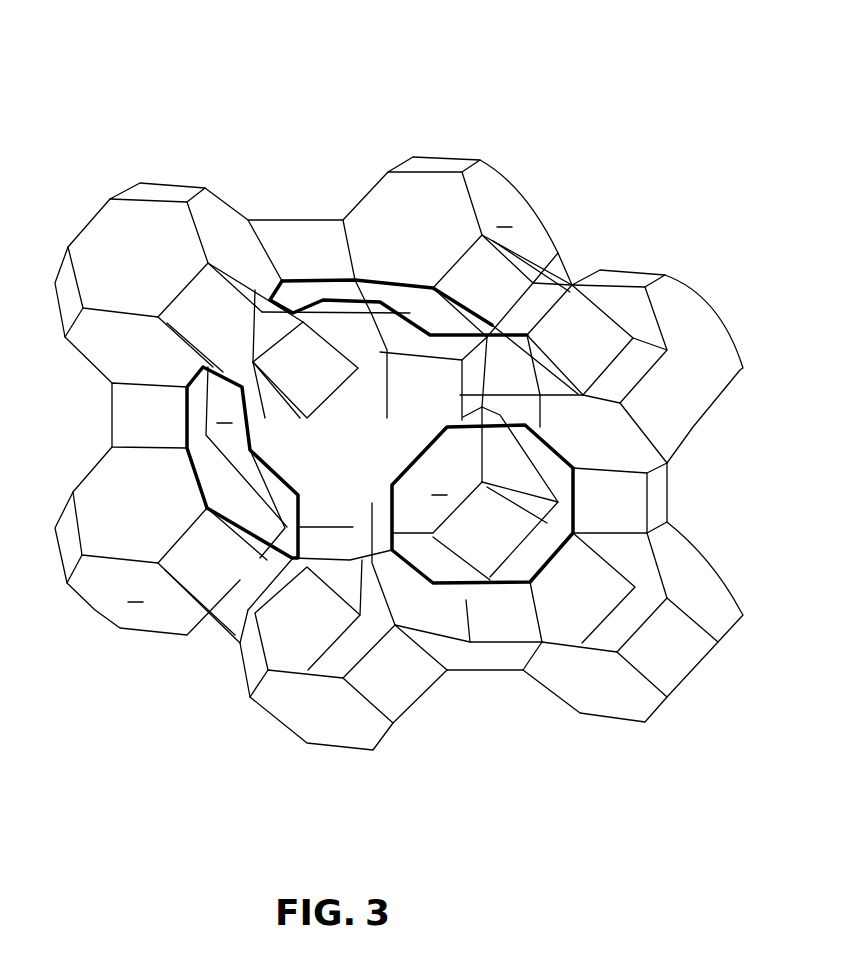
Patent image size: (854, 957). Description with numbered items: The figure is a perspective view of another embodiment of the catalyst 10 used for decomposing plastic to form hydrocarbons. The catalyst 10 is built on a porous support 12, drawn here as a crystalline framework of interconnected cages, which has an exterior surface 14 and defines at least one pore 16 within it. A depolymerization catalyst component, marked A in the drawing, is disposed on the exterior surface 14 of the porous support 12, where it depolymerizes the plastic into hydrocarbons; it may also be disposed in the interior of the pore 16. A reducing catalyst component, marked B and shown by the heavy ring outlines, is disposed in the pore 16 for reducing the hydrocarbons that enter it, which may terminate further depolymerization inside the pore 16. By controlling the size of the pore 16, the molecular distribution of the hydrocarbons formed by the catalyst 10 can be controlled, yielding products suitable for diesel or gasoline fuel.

The catalyst 10 is at (201, 130).
The porous support 12 is at (393, 152).
The exterior surface 14 is at (67, 543).
The pore 16 is at (483, 533).